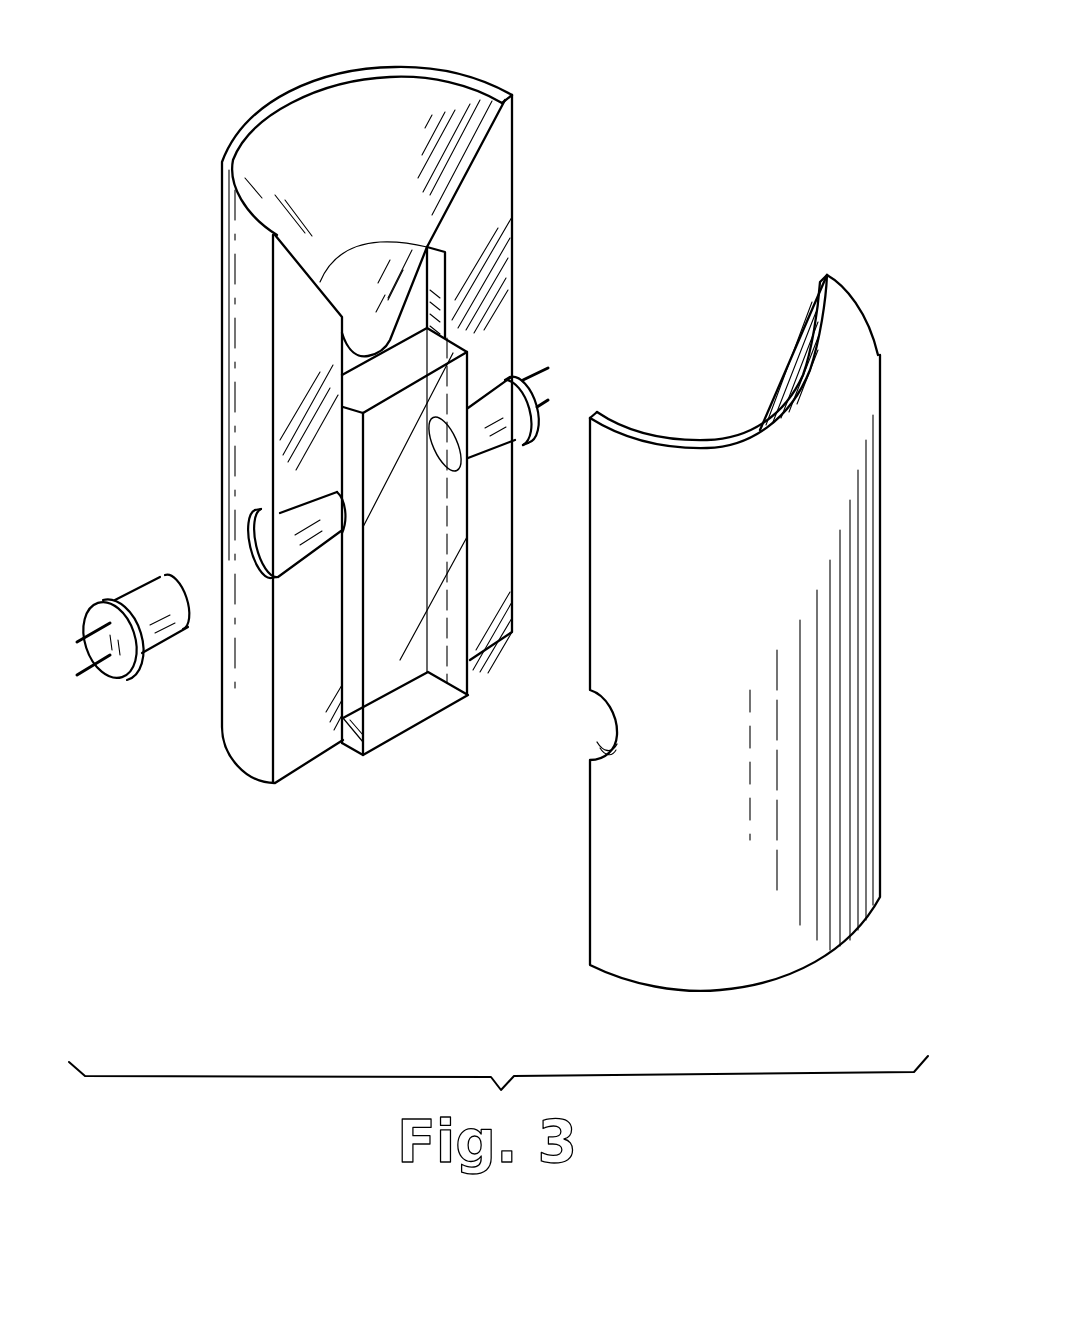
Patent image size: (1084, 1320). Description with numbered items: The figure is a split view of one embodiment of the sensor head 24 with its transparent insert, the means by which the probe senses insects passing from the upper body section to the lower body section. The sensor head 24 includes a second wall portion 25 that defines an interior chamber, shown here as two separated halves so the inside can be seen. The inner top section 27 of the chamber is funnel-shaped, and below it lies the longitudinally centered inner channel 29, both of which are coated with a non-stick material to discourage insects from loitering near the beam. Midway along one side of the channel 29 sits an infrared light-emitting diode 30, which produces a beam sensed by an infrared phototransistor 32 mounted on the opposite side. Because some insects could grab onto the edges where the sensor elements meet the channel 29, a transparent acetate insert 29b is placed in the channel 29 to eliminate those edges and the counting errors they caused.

The sensor head 24 is at (184, 102).
The second wall portion 25 is at (222, 292).
The inner top section 27 is at (340, 152).
The inner channel 29 is at (362, 338).
The transparent acetate insert 29b is at (430, 725).
The infrared light-emitting diode 30 is at (132, 592).
The infrared phototransistor 32 is at (532, 393).